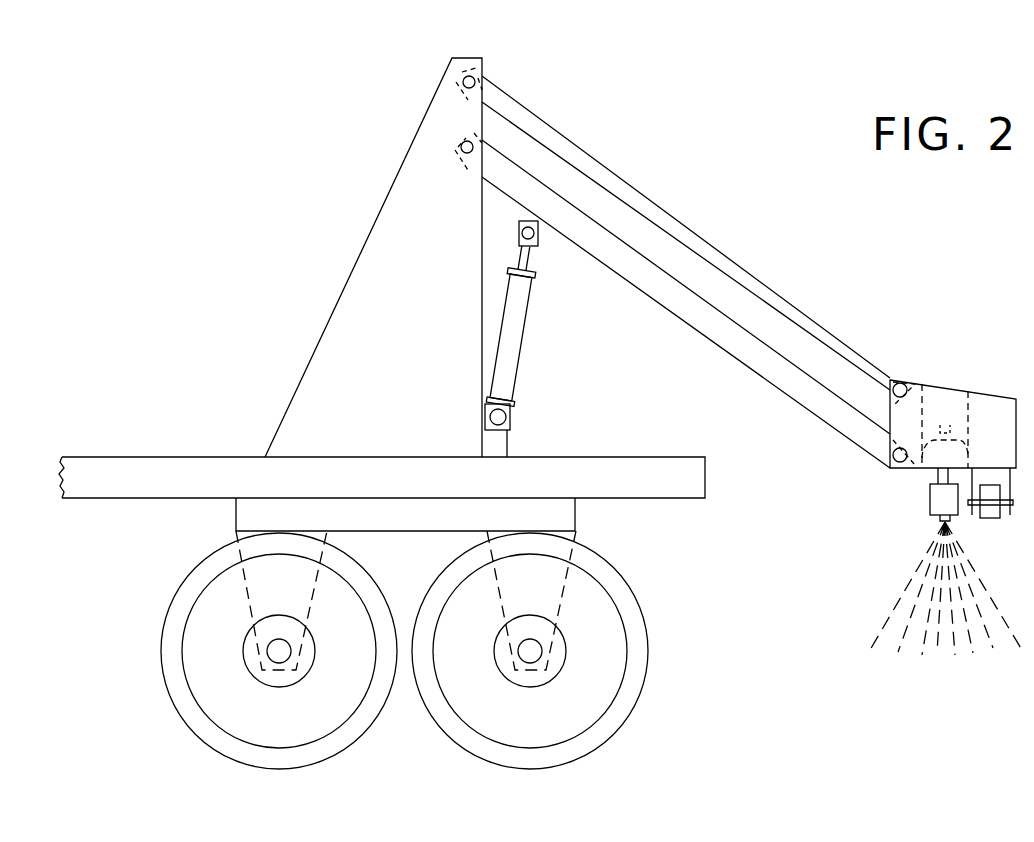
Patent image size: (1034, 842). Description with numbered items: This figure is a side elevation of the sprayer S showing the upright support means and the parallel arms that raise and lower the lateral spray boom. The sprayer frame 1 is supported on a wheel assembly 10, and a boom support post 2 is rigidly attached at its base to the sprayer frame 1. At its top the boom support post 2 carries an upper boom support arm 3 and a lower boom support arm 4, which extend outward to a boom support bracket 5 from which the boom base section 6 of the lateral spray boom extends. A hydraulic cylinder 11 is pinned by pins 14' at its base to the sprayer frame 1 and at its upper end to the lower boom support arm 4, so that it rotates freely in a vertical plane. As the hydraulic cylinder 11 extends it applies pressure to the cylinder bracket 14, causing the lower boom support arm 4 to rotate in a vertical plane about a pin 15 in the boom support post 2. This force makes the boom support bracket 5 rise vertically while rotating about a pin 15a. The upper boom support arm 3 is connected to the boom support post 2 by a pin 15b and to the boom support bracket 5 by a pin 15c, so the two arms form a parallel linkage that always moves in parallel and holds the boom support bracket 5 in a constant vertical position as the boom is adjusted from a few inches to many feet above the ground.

The sprayer S is at (728, 172).
The sprayer frame 1 is at (566, 485).
The boom support post 2 is at (422, 336).
The upper boom support arm 3 is at (764, 259).
The lower boom support arm 4 is at (684, 324).
The boom support bracket 5 is at (945, 413).
The boom base section 6 is at (930, 512).
The wheel assembly 10 is at (593, 697).
The hydraulic cylinder 11 is at (528, 336).
The cylinder bracket 14 is at (543, 240).
The pin 14' is at (524, 317).
The pin 15 is at (464, 148).
The pin 15a is at (900, 468).
The pin 15b is at (474, 81).
The pin 15c is at (904, 382).